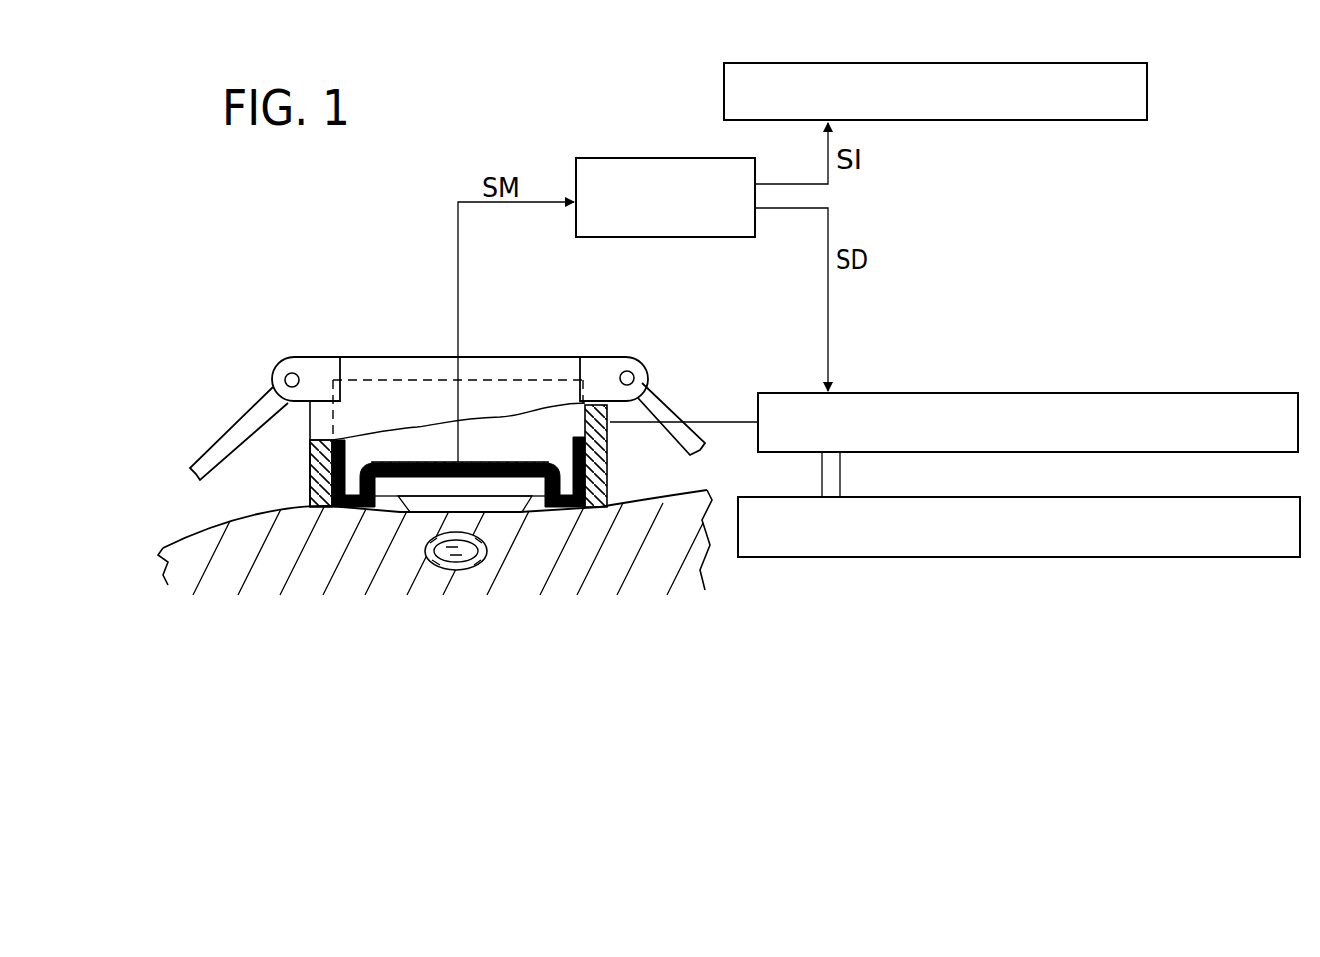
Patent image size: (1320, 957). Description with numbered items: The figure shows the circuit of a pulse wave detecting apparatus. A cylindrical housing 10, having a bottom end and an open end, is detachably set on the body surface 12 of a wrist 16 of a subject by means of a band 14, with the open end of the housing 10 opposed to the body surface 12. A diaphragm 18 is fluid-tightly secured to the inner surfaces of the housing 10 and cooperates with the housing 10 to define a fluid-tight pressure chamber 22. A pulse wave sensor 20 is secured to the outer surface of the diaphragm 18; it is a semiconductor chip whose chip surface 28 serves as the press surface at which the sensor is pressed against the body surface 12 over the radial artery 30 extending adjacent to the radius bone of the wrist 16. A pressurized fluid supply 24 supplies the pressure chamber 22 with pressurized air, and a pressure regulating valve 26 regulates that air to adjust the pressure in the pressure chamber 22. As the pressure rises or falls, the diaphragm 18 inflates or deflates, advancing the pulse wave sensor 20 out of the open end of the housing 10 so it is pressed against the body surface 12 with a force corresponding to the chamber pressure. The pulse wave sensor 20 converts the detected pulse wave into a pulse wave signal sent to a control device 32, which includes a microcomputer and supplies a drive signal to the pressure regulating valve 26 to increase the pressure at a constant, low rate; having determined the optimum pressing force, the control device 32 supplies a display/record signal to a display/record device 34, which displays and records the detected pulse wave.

The cylindrical housing 10 is at (320, 466).
The body surface 12 is at (200, 530).
The band 14 is at (235, 427).
The wrist 16 is at (158, 578).
The diaphragm 18 is at (343, 508).
The pulse wave sensor 20 is at (404, 527).
The pressure chamber 22 is at (502, 452).
The pressurized fluid supply 24 is at (890, 557).
The pressure regulating valve 26 is at (879, 395).
The chip surface 28 is at (492, 515).
The radial artery 30 is at (455, 570).
The control device 32 is at (621, 160).
The display/record device 34 is at (880, 64).